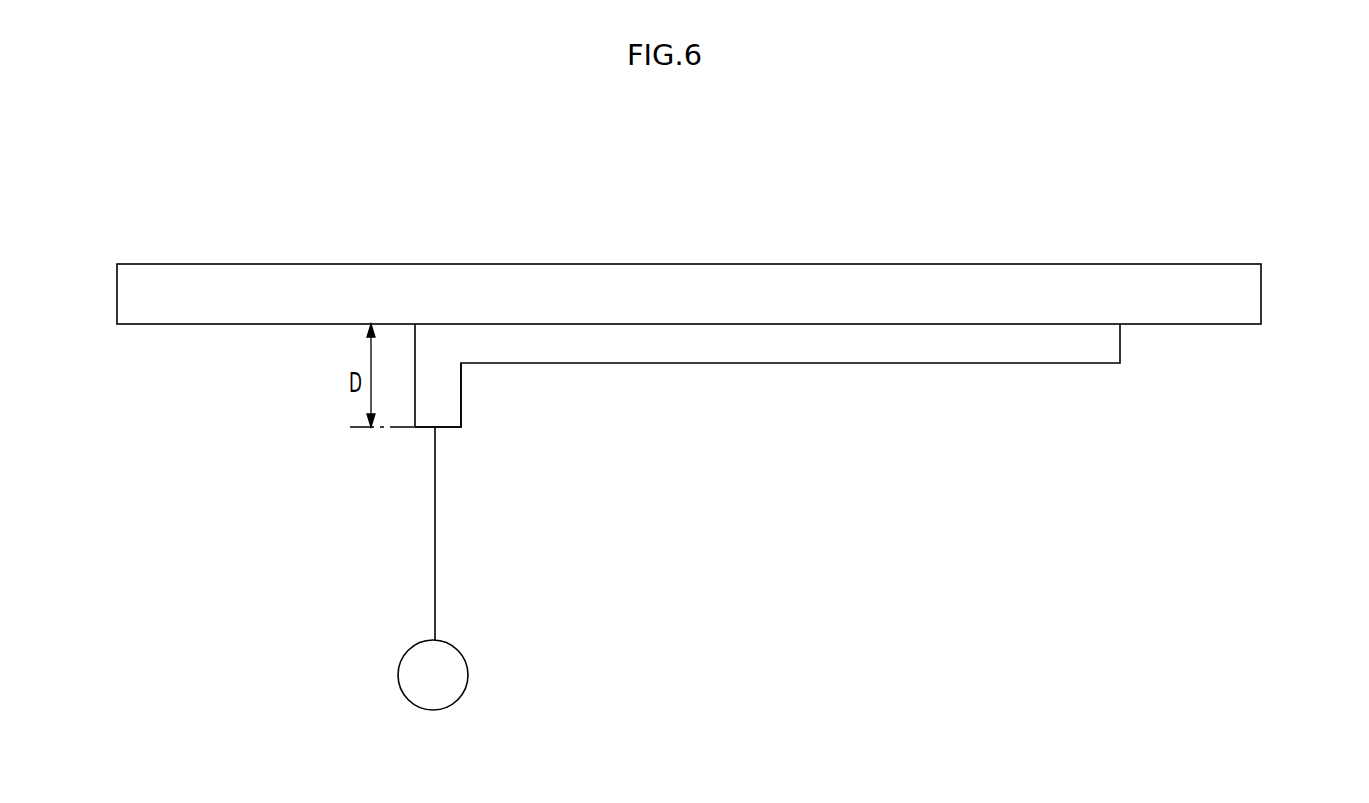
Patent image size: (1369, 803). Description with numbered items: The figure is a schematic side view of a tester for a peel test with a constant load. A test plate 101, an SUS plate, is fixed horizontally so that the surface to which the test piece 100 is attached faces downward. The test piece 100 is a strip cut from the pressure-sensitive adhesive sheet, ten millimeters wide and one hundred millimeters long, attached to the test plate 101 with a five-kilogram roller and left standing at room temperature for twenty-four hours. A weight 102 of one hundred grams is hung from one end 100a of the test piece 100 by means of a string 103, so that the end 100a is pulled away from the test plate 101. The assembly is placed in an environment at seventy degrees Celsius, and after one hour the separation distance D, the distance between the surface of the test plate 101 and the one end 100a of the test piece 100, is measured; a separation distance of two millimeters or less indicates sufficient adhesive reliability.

The test plate 101 is at (1250, 306).
The test piece 100 is at (785, 355).
The one end of the test piece 100a is at (450, 397).
The string 103 is at (435, 553).
The weight 102 is at (445, 677).